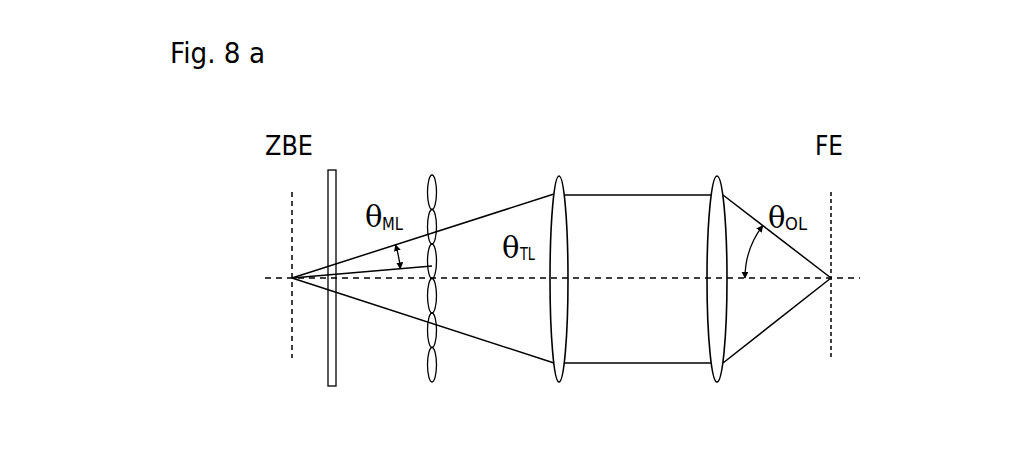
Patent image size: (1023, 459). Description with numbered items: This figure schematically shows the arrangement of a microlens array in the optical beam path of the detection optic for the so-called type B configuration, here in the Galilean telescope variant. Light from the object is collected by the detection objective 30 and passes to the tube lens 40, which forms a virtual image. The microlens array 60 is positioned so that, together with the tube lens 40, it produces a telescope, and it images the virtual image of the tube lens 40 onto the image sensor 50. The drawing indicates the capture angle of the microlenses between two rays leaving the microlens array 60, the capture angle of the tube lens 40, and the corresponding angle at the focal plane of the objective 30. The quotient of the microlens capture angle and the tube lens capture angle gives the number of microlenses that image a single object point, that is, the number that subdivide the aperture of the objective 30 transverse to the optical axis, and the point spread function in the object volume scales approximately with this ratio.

The image sensor 50 is at (334, 297).
The microlens array 60 is at (450, 256).
The tube lens 40 is at (583, 256).
The detection objective 30 is at (737, 256).